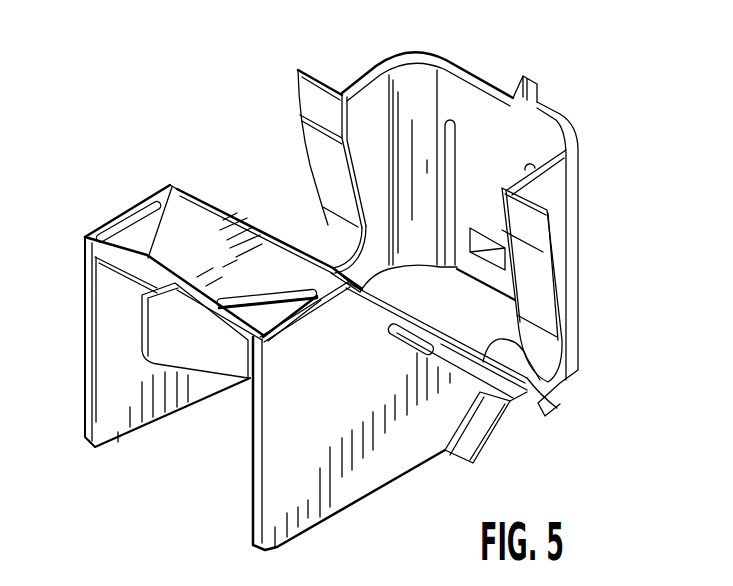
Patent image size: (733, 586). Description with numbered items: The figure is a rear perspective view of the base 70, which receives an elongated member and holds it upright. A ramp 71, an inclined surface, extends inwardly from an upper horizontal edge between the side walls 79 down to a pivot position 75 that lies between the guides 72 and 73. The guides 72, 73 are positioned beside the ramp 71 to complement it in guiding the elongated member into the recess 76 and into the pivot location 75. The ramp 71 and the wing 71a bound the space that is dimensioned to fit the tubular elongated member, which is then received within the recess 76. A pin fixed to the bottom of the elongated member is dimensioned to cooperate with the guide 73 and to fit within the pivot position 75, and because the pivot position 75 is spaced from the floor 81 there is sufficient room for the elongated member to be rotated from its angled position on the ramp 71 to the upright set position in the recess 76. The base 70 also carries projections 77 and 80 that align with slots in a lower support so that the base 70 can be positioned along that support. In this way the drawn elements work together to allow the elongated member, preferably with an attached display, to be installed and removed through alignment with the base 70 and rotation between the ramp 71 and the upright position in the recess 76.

The base 70 is at (226, 118).
The ramp 71 is at (205, 270).
The wing 71a is at (183, 241).
The guide 72 is at (323, 157).
The guide 73 is at (522, 357).
The pivot position 75 is at (325, 238).
The recess 76 is at (503, 137).
The projection 77 is at (538, 98).
The side wall 79 is at (110, 333).
The projection 80 is at (167, 355).
The floor 81 is at (425, 317).